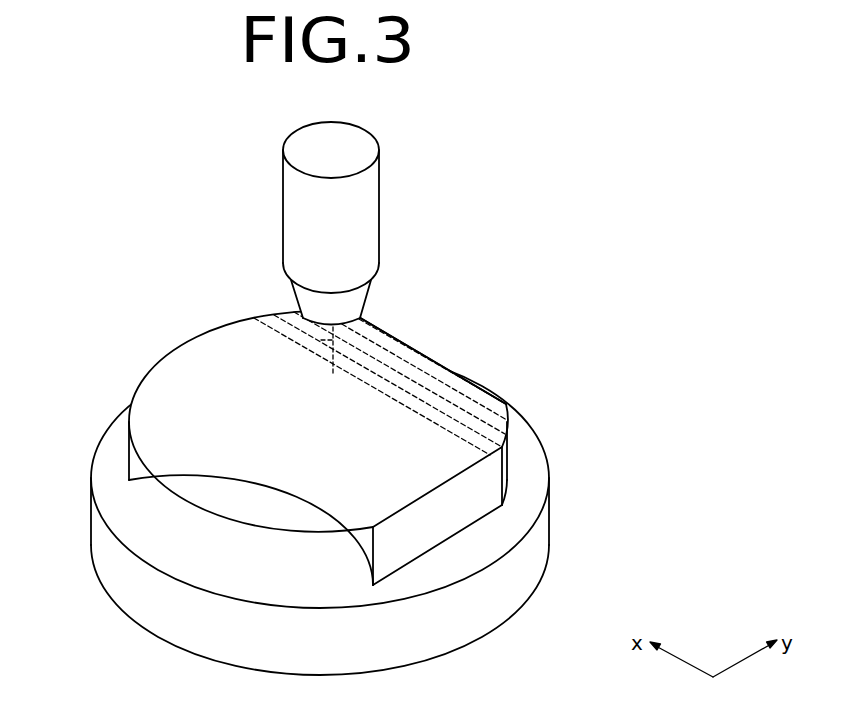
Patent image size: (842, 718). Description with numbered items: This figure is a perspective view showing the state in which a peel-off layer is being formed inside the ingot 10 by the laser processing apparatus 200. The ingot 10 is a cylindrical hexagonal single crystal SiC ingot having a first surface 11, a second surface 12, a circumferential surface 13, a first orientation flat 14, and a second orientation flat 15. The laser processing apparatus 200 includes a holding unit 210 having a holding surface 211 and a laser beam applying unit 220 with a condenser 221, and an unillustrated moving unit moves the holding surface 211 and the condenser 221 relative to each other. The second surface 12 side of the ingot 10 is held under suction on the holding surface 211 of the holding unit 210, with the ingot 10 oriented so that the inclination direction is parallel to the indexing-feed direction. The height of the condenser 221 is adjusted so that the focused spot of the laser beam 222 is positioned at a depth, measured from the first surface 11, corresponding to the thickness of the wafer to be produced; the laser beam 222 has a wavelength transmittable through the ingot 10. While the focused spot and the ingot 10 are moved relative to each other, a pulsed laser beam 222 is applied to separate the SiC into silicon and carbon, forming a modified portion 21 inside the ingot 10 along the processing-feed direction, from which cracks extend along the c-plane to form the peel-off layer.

The ingot 10 is at (326, 463).
The first surface 11 is at (157, 393).
The second surface 12 is at (180, 548).
The circumferential surface 13 is at (163, 513).
The first orientation flat 14 is at (455, 508).
The second orientation flat 15 is at (428, 352).
The modified portion 21 is at (467, 407).
The laser processing apparatus 200 is at (366, 393).
The holding unit 210 is at (367, 511).
The holding surface 211 is at (527, 485).
The laser beam applying unit 220 is at (353, 243).
The condenser 221 is at (357, 253).
The laser beam 222 is at (308, 333).